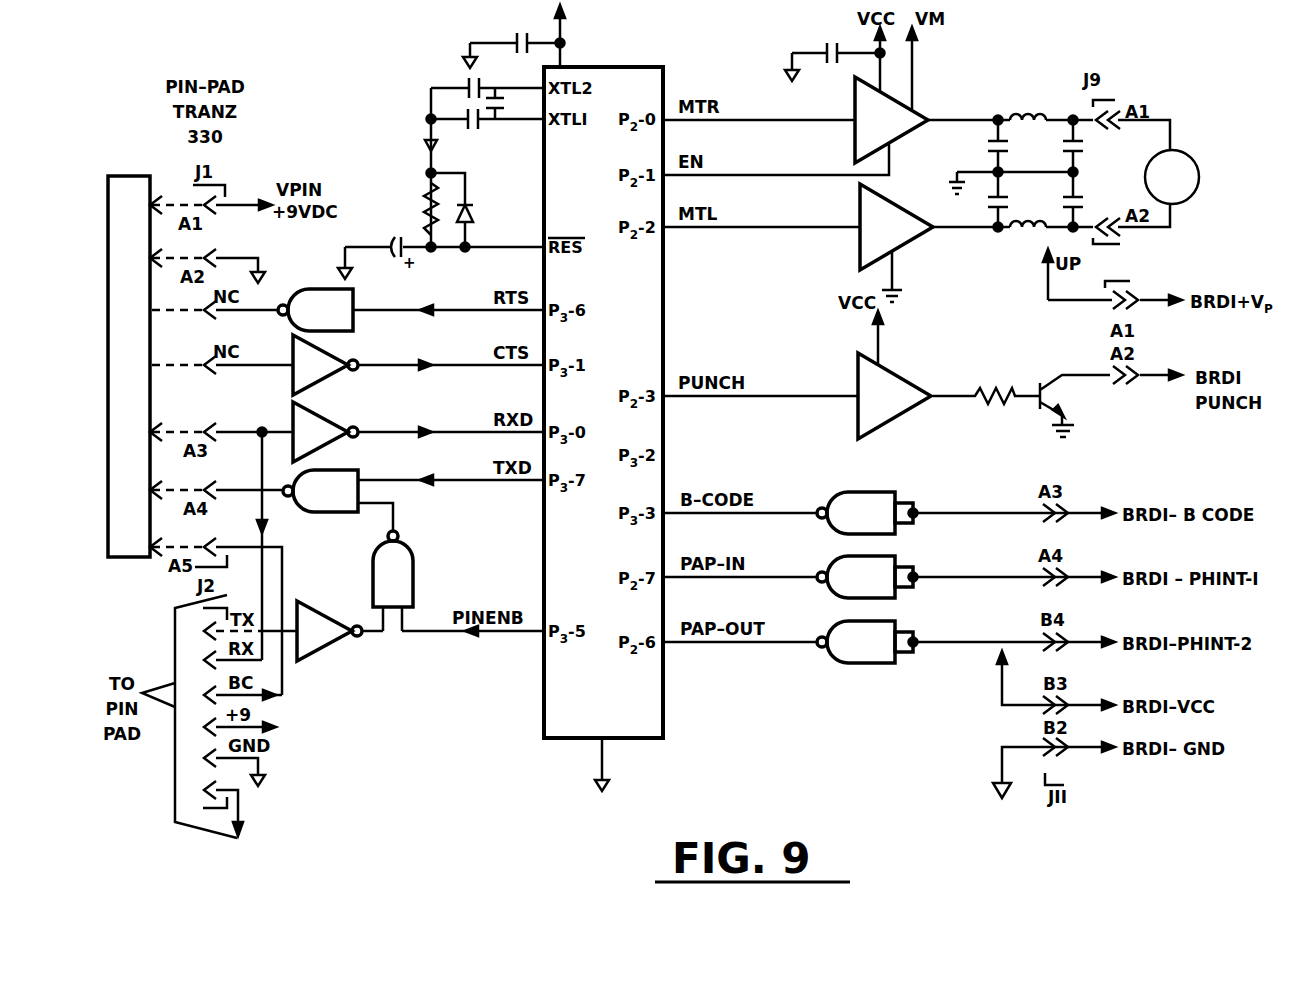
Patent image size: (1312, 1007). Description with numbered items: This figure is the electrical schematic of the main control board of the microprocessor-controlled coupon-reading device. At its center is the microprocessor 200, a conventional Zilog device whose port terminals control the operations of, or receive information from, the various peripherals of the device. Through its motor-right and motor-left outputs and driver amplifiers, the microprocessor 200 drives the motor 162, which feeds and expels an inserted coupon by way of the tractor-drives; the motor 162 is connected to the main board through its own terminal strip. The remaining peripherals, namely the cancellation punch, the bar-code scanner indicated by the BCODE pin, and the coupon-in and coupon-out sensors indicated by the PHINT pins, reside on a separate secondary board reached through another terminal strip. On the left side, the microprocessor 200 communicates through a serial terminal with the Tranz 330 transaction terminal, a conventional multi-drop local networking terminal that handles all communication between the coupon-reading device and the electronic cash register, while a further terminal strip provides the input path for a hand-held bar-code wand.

The Tranz 330 transaction terminal 330 is at (133, 162).
The microprocessor 200 is at (609, 52).
The motor 162 is at (1199, 182).